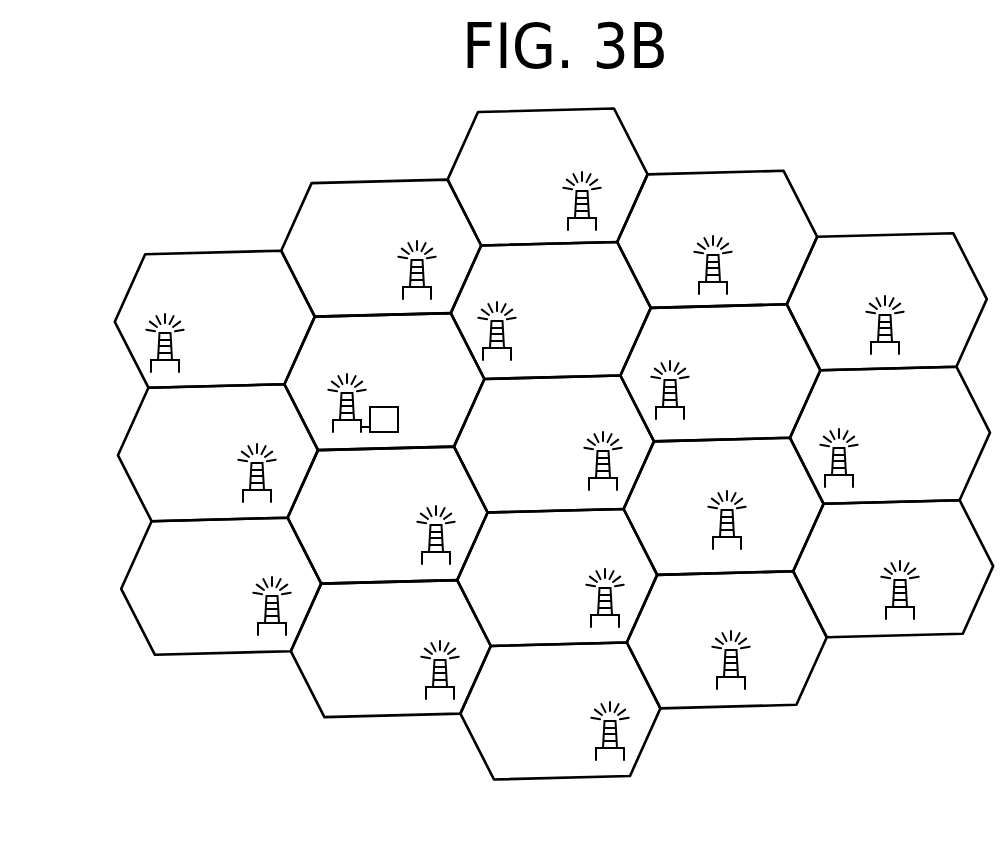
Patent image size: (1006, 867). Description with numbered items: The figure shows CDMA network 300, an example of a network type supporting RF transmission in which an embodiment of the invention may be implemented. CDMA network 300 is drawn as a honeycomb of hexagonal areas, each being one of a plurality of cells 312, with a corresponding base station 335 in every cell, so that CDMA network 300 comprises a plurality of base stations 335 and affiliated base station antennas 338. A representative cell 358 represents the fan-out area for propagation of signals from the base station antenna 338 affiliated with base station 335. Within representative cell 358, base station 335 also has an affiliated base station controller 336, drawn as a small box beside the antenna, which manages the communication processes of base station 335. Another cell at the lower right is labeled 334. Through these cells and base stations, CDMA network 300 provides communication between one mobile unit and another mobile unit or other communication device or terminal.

The CDMA network 300 is at (850, 163).
The cell 312 is at (200, 270).
The cell 334 is at (817, 667).
The base station 335 is at (386, 392).
The base station controller 336 is at (390, 433).
The base station antenna 338 is at (342, 403).
The representative cell 358 is at (372, 362).